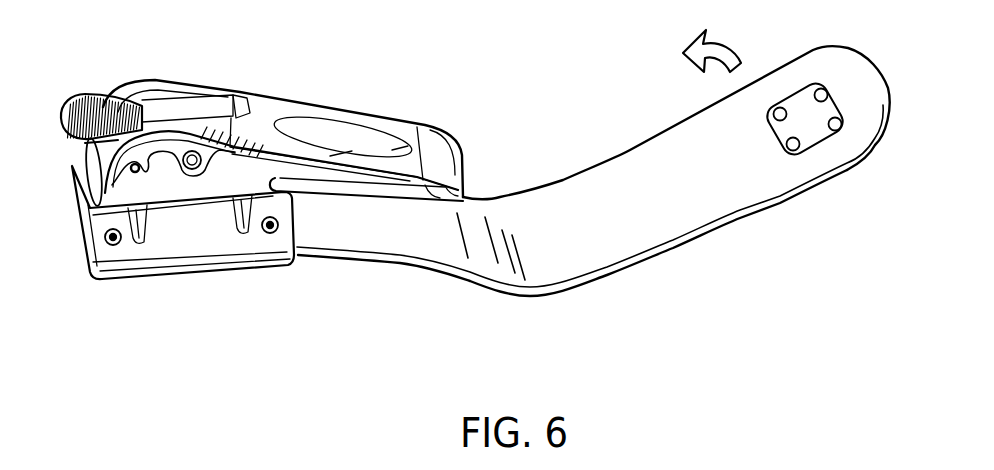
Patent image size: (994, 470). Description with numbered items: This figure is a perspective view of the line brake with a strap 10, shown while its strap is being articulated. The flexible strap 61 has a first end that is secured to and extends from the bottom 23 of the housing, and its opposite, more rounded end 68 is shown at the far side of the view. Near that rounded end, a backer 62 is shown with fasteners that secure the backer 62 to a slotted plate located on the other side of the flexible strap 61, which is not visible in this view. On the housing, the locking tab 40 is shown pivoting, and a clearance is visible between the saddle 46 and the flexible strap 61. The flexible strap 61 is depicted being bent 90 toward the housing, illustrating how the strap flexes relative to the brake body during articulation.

The line brake with a strap 10 is at (237, 323).
The bottom 23 is at (143, 277).
The locking tab 40 is at (80, 100).
The saddle 46 is at (395, 210).
The flexible strap 61 is at (680, 202).
The backer 62 is at (803, 153).
The end 68 is at (887, 117).
The bent 90 is at (719, 42).